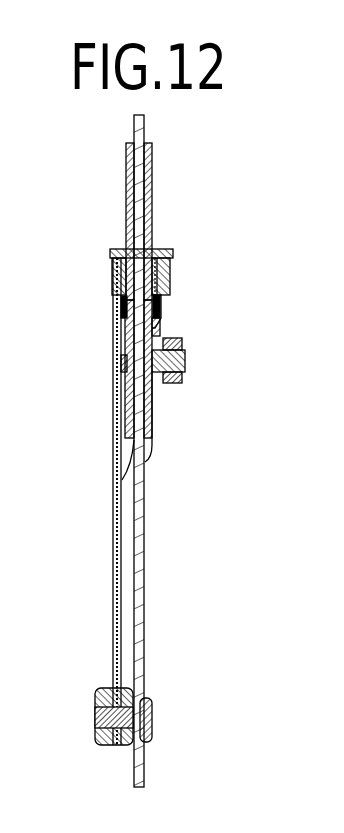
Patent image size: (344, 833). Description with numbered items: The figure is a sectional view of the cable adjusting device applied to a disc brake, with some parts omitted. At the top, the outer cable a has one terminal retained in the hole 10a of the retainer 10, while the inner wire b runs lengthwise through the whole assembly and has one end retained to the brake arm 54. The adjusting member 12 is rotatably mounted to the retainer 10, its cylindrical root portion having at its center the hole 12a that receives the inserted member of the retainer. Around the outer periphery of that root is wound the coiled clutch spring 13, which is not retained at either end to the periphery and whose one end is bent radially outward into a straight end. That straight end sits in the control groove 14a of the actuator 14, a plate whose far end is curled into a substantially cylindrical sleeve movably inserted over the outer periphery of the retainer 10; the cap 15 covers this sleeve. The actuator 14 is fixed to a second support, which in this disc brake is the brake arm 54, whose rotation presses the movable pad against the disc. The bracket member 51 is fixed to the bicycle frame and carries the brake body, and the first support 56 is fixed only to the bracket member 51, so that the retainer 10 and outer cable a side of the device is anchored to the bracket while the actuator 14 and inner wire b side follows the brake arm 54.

The inner wire b is at (143, 127).
The outer cable a is at (152, 192).
The cap 15 is at (172, 252).
The retainer 10 is at (112, 272).
The hole 10a is at (168, 280).
The hole 12a is at (162, 300).
The control groove 14a is at (120, 298).
The clutch spring 13 is at (162, 318).
The adjusting member 12 is at (122, 382).
The bracket member 51 is at (182, 378).
The first support 56 is at (161, 382).
The actuator 14 is at (113, 514).
The brake arm 54 is at (142, 687).